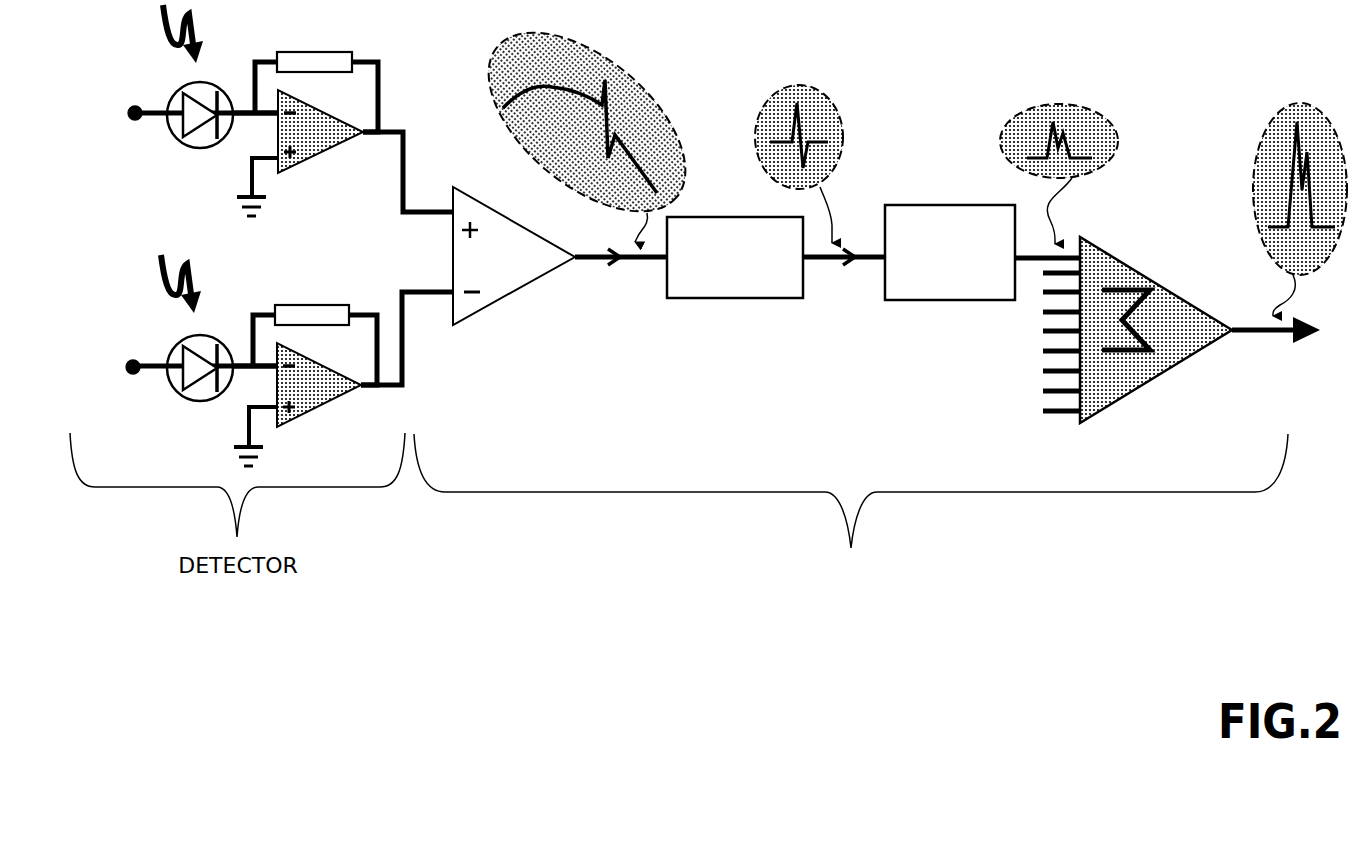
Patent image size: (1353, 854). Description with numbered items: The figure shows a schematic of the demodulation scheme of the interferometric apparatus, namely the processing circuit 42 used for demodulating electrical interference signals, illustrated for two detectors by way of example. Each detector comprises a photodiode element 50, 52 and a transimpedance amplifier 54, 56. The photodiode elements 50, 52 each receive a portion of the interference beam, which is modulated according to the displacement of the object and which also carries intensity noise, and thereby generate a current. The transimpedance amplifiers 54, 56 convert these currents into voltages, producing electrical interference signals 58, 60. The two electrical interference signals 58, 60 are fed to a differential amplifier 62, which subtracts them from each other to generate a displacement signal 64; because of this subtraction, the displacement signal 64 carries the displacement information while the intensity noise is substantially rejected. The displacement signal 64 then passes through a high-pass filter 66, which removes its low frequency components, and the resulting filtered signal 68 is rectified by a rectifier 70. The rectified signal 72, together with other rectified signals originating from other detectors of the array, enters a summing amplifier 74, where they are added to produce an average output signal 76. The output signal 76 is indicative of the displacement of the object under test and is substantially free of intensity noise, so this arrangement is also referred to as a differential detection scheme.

The processing circuit 42 is at (836, 587).
The photodiode element 50 is at (205, 140).
The photodiode element 52 is at (189, 358).
The transimpedance amplifier 54 is at (317, 145).
The transimpedance amplifier 56 is at (305, 386).
The electrical interference signal 58 is at (405, 165).
The electrical interference signal 60 is at (405, 327).
The differential amplifier 62 is at (505, 277).
The displacement signal 64 is at (657, 262).
The high-pass filter 66 is at (762, 287).
The filtered signal 68 is at (873, 262).
The rectifier 70 is at (983, 223).
The rectified signal 72 is at (1037, 260).
The summing amplifier 74 is at (1118, 372).
The output signal 76 is at (1242, 323).